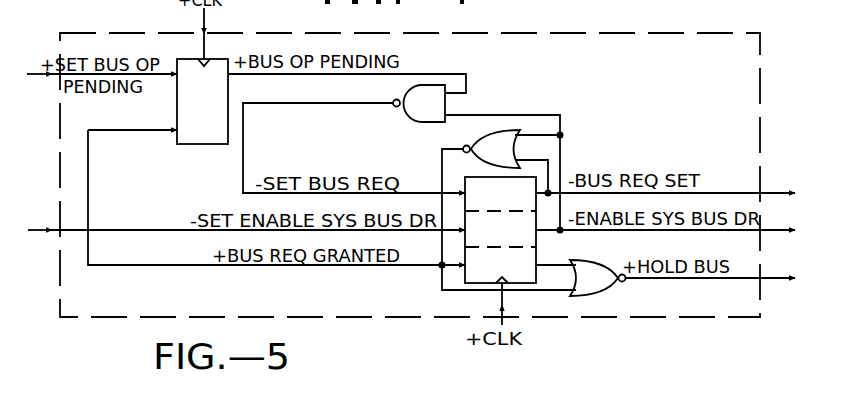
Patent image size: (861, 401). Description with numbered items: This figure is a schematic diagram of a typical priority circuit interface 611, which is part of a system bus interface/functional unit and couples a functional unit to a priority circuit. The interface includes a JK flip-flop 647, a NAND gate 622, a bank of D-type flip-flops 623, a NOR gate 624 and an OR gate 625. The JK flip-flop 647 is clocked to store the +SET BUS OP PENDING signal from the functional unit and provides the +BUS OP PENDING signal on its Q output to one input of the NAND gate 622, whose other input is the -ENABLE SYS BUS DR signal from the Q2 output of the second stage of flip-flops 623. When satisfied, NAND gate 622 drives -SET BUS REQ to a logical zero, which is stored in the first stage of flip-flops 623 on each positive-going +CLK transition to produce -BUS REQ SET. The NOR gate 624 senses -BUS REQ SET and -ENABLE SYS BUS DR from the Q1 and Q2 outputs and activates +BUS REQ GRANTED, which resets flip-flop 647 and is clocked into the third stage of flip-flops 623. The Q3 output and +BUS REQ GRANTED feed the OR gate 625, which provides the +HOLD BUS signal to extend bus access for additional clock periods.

The priority circuit interface 611 is at (647, 30).
The JK flip-flop 647 is at (220, 103).
The NAND gate 622 is at (439, 113).
The NOR gate 624 is at (512, 159).
The bank of D-type flip-flops 623 is at (538, 253).
The OR gate 625 is at (598, 278).